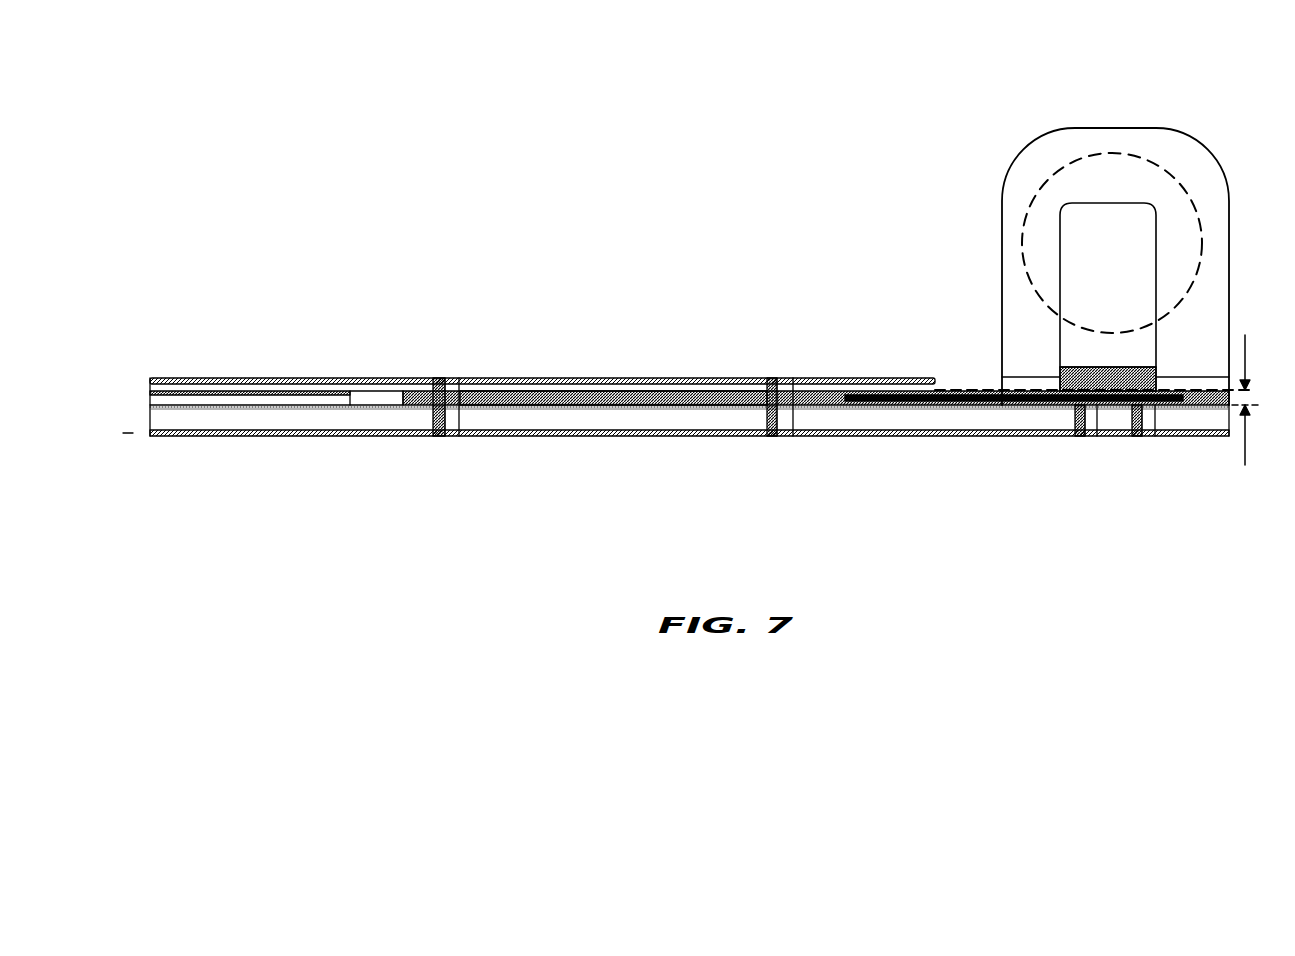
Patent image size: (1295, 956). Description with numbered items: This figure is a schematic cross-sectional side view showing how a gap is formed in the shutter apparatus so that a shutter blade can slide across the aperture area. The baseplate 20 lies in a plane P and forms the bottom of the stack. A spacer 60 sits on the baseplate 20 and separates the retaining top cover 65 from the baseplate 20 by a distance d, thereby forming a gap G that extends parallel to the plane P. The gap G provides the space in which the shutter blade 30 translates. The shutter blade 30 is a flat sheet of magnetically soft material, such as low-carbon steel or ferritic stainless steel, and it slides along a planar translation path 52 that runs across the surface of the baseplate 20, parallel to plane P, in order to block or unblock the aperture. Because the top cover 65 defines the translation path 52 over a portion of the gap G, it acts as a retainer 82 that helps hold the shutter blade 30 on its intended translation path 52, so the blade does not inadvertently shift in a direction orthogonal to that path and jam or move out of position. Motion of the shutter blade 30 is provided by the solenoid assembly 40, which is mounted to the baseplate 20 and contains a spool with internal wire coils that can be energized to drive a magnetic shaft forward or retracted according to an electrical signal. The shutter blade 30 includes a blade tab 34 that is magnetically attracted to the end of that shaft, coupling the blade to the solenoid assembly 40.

The baseplate 20 is at (338, 436).
The retaining top cover 65 is at (238, 380).
The spacer 60 is at (305, 392).
The gap G is at (393, 392).
The shutter blade 30 is at (562, 392).
The planar translation path 52 is at (710, 392).
The retainer 82 is at (845, 382).
The solenoid assembly 40 is at (1092, 150).
The blade tab 34 is at (1062, 236).
The distance d is at (1256, 400).
The plane P is at (140, 436).